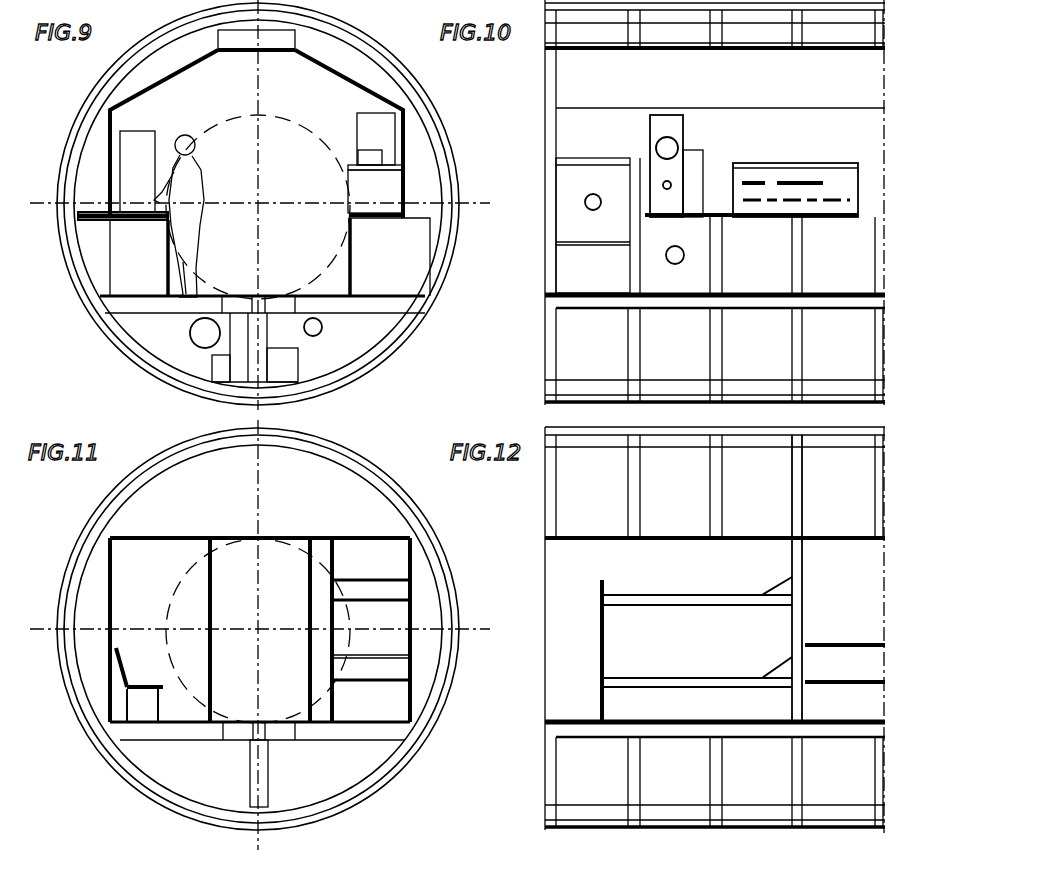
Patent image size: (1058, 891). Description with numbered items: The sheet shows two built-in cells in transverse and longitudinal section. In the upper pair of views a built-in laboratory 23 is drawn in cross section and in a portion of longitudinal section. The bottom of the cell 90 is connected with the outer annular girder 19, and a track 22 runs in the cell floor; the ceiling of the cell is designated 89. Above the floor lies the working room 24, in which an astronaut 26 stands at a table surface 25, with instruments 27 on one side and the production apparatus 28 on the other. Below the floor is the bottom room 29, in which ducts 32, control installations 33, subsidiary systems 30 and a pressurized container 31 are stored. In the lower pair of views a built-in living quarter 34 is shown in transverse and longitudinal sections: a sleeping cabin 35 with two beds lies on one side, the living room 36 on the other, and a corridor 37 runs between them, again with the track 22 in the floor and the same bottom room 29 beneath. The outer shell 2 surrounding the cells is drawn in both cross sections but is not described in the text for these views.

In FIG. 9, the cylindrical hull 2 is at (389, 54).
In FIG. 11, the cylindrical hull 2 is at (410, 499).
In FIG. 9, the inner liner 19 is at (442, 187).
In FIG. 9, the central duct 22 is at (284, 296).
In FIG. 11, the central duct 22 is at (274, 728).
In FIG. 9, the equipment unit 23 is at (372, 106).
In FIG. 9, the control room 24 is at (258, 190).
In FIG. 10, the control room 24 is at (784, 187).
In FIG. 9, the console 25 is at (118, 212).
In FIG. 10, the console 25 is at (872, 215).
In FIG. 9, the operator 26 is at (202, 174).
In FIG. 9, the cabinet 27 is at (130, 173).
In FIG. 10, the cabinet 27 is at (820, 172).
In FIG. 9, the instrument panel 28 is at (395, 163).
In FIG. 10, the instrument panel 28 is at (678, 142).
In FIG. 9, the lower compartment 29 is at (370, 327).
In FIG. 10, the lower compartment 29 is at (715, 355).
In FIG. 11, the lower compartment 29 is at (338, 762).
In FIG. 12, the lower compartment 29 is at (715, 782).
In FIG. 9, the tank 30 is at (222, 364).
In FIG. 9, the pipe 31 is at (190, 333).
In FIG. 9, the pipe 32 is at (323, 331).
In FIG. 9, the battery box 33 is at (282, 363).
In FIG. 11, the direction arrow 34 is at (290, 539).
In FIG. 11, the sleeping room 35 is at (372, 570).
In FIG. 12, the sleeping room 35 is at (702, 577).
In FIG. 11, the living room 36 is at (153, 557).
In FIG. 12, the living room 36 is at (845, 620).
In FIG. 11, the corridor 37 is at (258, 630).
In FIG. 9, the insulation layer 89 is at (337, 68).
In FIG. 9, the deck floor 90 is at (382, 306).
In FIG. 10, the deck floor 90 is at (775, 300).
In FIG. 11, the deck floor 90 is at (358, 731).
In FIG. 12, the deck floor 90 is at (775, 729).